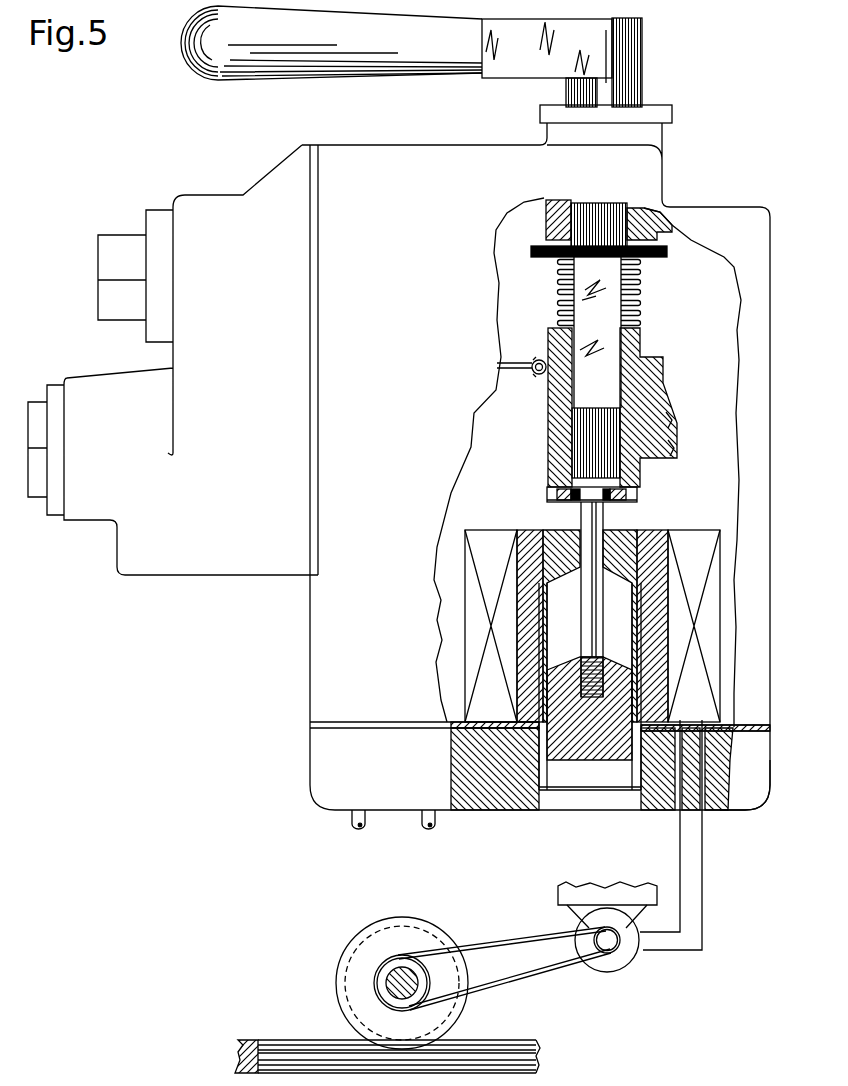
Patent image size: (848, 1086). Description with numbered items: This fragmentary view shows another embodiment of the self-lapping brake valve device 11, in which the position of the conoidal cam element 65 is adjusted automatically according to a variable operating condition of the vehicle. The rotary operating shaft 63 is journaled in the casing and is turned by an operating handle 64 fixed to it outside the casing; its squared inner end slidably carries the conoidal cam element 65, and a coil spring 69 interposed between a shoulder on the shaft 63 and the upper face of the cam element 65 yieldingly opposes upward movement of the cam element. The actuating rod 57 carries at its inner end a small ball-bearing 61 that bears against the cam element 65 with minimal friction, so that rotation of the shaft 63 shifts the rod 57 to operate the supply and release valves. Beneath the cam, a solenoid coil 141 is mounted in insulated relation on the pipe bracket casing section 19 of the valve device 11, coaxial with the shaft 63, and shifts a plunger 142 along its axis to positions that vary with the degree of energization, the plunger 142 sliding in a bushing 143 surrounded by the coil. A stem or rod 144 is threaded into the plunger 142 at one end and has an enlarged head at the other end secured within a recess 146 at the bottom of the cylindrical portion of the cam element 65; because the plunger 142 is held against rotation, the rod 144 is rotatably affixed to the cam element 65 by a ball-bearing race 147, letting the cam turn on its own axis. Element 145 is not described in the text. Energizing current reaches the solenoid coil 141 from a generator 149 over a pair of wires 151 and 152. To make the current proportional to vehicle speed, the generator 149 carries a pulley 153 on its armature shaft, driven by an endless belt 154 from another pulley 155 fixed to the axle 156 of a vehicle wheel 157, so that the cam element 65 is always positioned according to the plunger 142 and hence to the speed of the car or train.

The self-lapping brake valve device 11 is at (391, 132).
The pipe bracket casing section 19 is at (755, 797).
The actuating rod 57 is at (512, 371).
The ball-bearing 61 is at (535, 360).
The operating shaft 63 is at (545, 104).
The operating handle 64 is at (220, 62).
The conoidal cam element 65 is at (655, 341).
The coil spring 69 is at (561, 272).
The solenoid coil 141 is at (691, 521).
The plunger 142 is at (587, 742).
The bushing 143 is at (541, 770).
The stem or rod 144 is at (593, 612).
The seal 145 is at (606, 503).
The recess 146 is at (572, 503).
The ball-bearing race 147 is at (552, 488).
The generator 149 is at (567, 902).
The wire 151 is at (679, 827).
The wire 152 is at (702, 827).
The pulley 153 is at (600, 950).
The endless belt 154 is at (473, 942).
The pulley 155 is at (385, 979).
The axle 156 is at (397, 957).
The vehicle wheel 157 is at (367, 942).